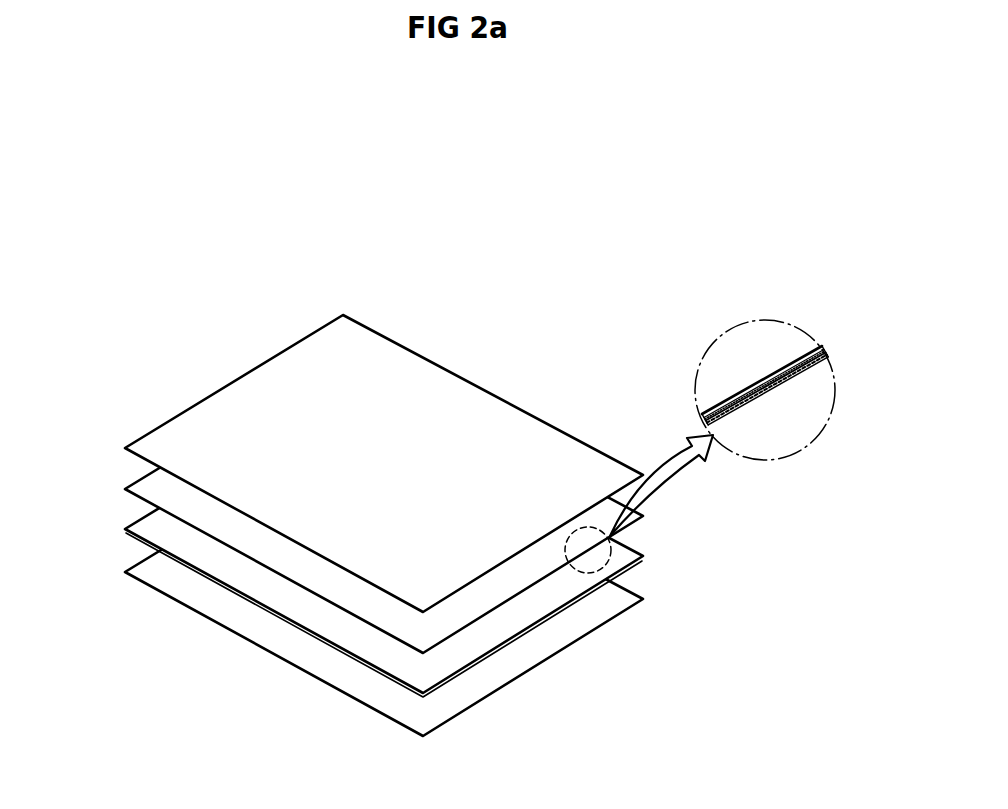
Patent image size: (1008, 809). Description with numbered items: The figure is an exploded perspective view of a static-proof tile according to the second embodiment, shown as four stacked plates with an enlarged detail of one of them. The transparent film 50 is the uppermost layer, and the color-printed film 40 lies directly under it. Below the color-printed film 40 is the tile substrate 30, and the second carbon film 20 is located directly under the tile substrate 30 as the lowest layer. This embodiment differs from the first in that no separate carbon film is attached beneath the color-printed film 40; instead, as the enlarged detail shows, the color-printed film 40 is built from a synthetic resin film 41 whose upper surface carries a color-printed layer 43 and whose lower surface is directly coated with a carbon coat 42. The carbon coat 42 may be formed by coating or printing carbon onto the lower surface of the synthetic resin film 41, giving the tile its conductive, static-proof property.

The second carbon film 20 is at (152, 583).
The tile substrate 30 is at (146, 518).
The color-printed film 40 is at (143, 479).
The transparent film 50 is at (146, 439).
The synthetic resin film 41 is at (824, 349).
The carbon coat 42 is at (713, 428).
The color-printed layer 43 is at (715, 407).